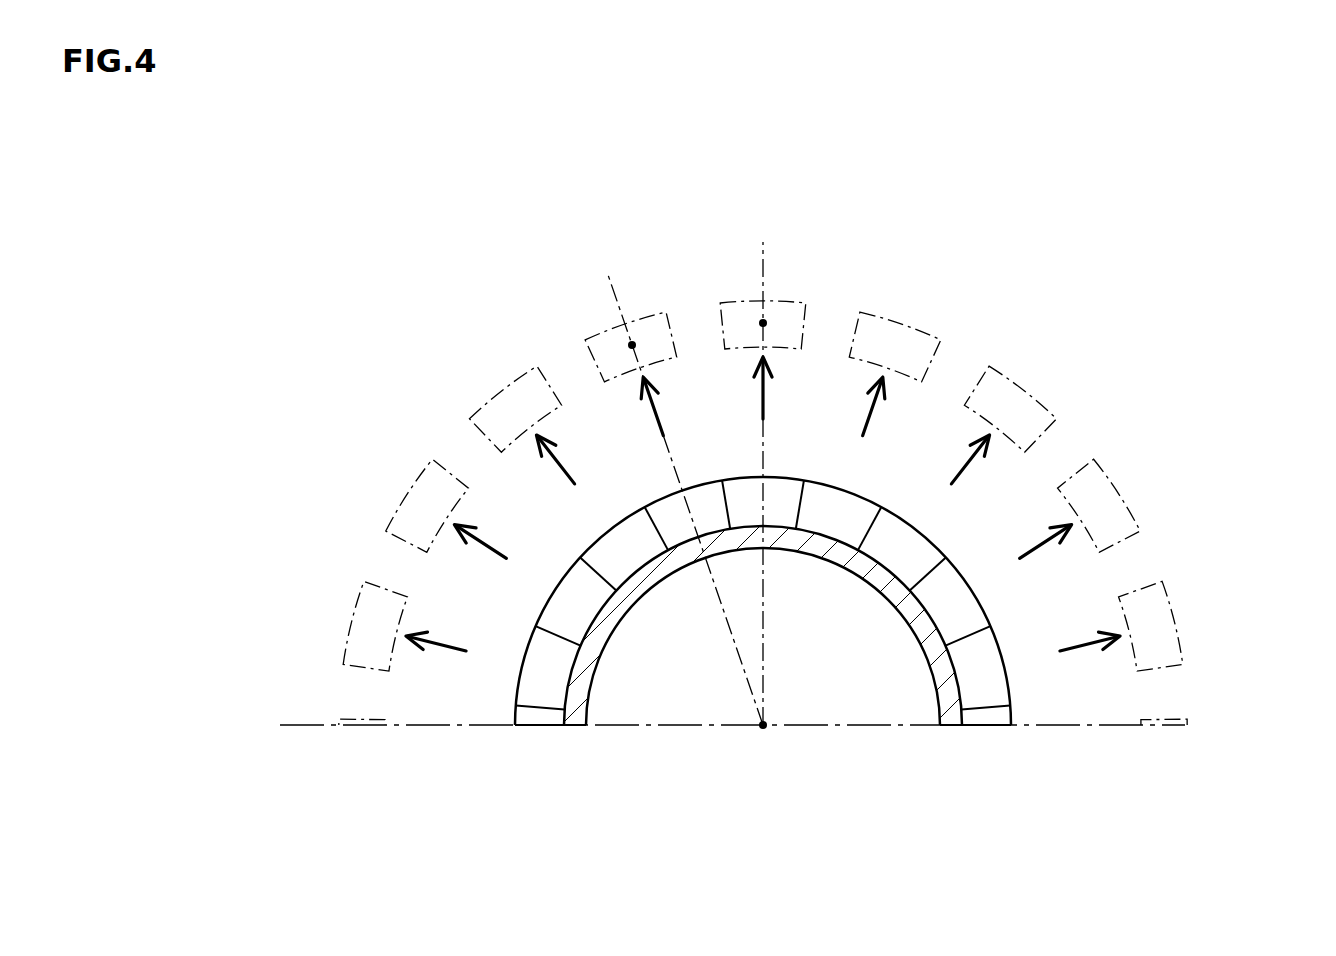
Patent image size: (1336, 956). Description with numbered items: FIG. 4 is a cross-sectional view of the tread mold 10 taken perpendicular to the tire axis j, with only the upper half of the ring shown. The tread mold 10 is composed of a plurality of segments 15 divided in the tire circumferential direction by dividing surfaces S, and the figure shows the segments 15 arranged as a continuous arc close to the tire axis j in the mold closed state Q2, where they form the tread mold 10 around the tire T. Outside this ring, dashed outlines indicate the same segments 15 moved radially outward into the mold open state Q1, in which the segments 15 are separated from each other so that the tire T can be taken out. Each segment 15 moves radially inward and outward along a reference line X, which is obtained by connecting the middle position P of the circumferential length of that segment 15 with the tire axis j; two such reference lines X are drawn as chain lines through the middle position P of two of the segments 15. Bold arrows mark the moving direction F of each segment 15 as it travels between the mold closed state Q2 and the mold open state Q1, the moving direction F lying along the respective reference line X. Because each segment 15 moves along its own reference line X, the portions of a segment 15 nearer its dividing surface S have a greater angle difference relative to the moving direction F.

The tread mold 10 is at (1023, 615).
The segment 15 is at (898, 532).
The mold open state Q1 is at (1157, 440).
The mold closed state Q2 is at (1020, 705).
The middle position P is at (766, 322).
The moving direction F is at (767, 390).
The reference line X is at (683, 469).
The dividing surface S is at (918, 622).
The tire T is at (630, 592).
The tire axis j is at (763, 725).